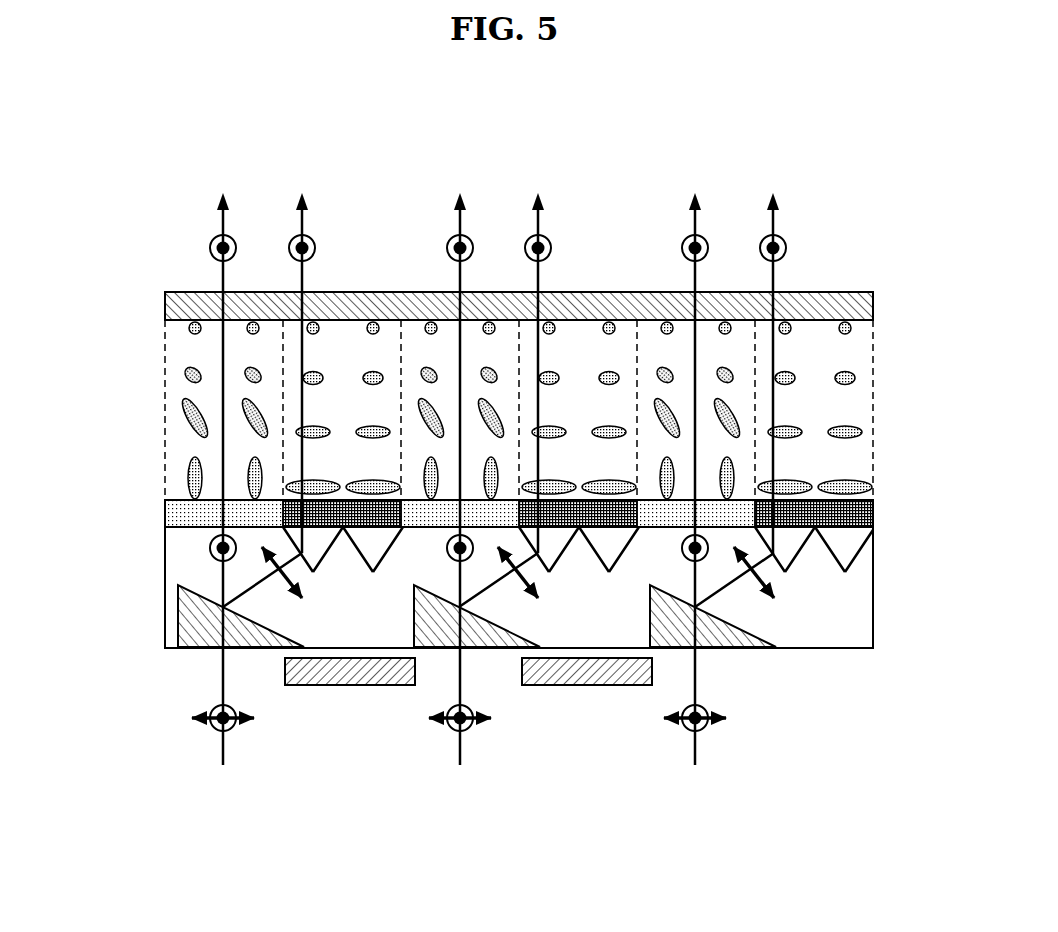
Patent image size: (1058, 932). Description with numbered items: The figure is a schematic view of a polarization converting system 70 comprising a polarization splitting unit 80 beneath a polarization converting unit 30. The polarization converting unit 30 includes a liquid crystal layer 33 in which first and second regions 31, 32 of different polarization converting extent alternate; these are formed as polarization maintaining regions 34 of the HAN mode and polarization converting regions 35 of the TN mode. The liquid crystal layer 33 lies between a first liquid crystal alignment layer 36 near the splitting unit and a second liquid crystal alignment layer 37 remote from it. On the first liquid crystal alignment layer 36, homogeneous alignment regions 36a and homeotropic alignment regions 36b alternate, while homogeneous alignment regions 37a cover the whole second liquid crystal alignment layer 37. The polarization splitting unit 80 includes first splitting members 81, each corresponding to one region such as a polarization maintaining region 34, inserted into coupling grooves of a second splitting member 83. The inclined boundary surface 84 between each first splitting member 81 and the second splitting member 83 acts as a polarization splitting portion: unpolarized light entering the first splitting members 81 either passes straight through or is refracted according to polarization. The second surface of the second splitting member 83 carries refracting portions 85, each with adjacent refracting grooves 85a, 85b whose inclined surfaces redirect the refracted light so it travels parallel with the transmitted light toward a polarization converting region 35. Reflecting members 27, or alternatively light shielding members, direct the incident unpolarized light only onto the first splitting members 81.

The polarization converting system 70 is at (166, 270).
The polarization converting unit 30 is at (882, 292).
The second liquid crystal alignment layer 37 is at (162, 307).
The homogeneous alignment region 37a is at (598, 300).
The liquid crystal layer 33 is at (162, 410).
The polarization converting region 35 is at (386, 364).
The polarization maintaining region 34 is at (501, 359).
The second region 32 is at (400, 290).
The first region 31 is at (402, 290).
The first liquid crystal alignment layer 36 is at (162, 513).
The homogeneous alignment region 36a is at (345, 498).
The homeotropic alignment region 36b is at (497, 497).
The polarization splitting unit 80 is at (882, 529).
The first splitting member 81 is at (483, 650).
The second splitting member 83 is at (858, 647).
The boundary surface 84 is at (505, 627).
The refracting portion 85 is at (873, 728).
The refracting groove 85a is at (313, 560).
The refracting groove 85b is at (375, 560).
The reflecting member 27 is at (330, 684).